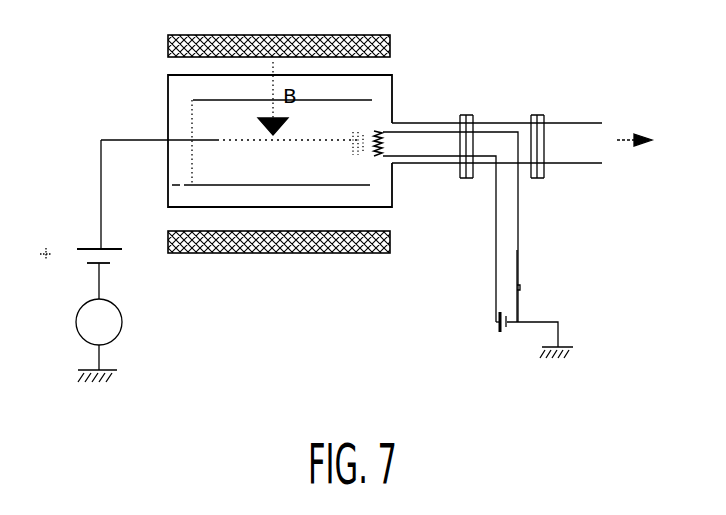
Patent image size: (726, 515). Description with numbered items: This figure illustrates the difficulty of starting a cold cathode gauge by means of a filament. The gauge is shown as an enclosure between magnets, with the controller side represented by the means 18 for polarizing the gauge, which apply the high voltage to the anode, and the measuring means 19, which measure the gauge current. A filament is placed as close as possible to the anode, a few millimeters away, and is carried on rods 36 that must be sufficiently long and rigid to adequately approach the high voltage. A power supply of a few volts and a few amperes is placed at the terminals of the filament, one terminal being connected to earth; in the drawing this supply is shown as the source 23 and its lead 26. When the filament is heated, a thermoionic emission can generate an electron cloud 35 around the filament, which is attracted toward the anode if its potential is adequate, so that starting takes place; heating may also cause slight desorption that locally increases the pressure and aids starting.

The means for polarizing the gauge 18 is at (115, 258).
The measuring means 19 is at (120, 333).
The battery / bias voltage source 23 is at (505, 334).
The lead wire 26 is at (521, 273).
The electron cloud 35 is at (362, 143).
The rods 36 is at (450, 132).